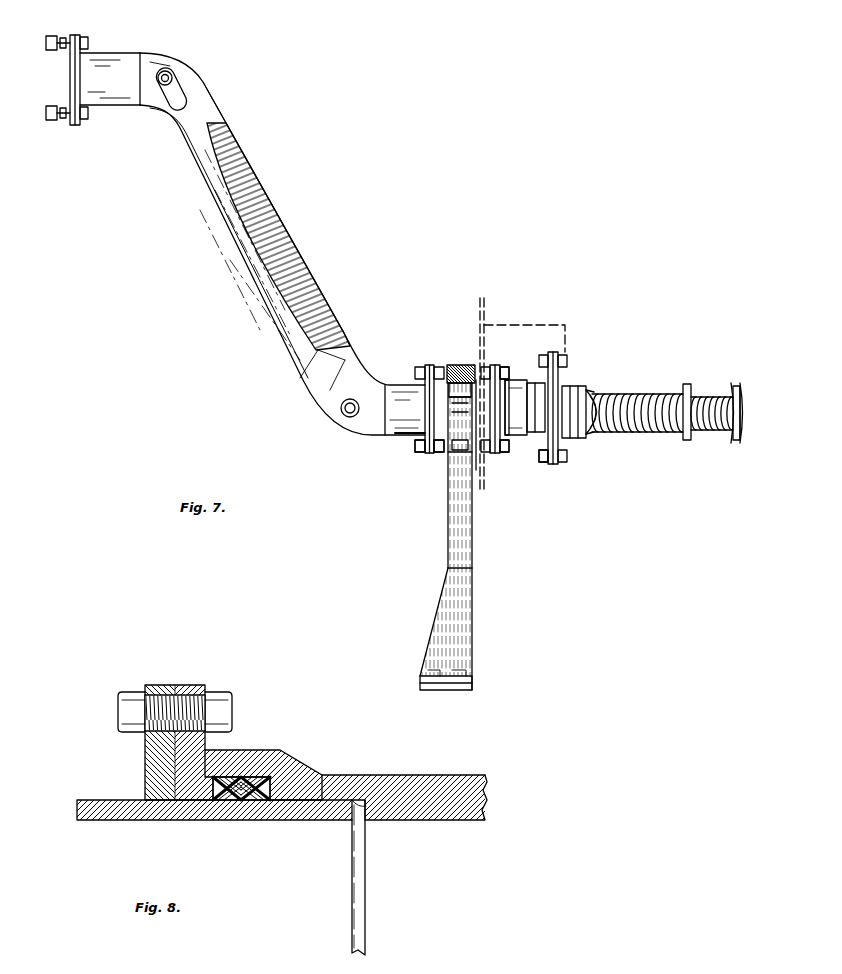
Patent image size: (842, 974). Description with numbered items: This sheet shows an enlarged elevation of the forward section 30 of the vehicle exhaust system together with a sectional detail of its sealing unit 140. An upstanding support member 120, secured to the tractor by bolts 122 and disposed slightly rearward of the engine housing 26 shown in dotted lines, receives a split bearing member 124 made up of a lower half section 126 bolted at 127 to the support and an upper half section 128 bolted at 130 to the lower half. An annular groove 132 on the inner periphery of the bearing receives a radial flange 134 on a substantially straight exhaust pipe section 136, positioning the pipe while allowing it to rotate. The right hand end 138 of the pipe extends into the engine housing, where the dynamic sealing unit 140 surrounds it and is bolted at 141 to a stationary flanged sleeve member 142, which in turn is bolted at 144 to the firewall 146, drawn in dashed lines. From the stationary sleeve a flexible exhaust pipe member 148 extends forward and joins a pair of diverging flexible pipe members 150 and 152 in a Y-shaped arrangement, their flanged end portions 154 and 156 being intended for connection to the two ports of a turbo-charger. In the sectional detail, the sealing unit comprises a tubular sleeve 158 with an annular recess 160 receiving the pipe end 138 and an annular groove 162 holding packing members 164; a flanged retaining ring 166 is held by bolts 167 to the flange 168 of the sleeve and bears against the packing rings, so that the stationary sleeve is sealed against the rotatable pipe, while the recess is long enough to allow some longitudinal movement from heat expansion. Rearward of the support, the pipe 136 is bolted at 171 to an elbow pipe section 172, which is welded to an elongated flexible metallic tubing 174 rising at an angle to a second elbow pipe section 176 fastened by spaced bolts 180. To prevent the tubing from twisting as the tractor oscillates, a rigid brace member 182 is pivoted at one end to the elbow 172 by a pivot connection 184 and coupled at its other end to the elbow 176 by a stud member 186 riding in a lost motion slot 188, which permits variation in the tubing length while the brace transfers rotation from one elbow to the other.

In FIG. 7, the engine housing 26 is at (486, 311).
In FIG. 7, the front portion of the exhaust system 30 is at (294, 246).
In FIG. 7, the support member 120 is at (465, 546).
In FIG. 7, the bolts 122 is at (470, 678).
In FIG. 7, the split bearing member 124 is at (441, 444).
In FIG. 7, the lower half section 126 is at (468, 447).
In FIG. 7, the bolts 127 is at (479, 463).
In FIG. 7, the upper half section 128 is at (456, 366).
In FIG. 7, the bolts 130 is at (478, 386).
In FIG. 7, the annular groove 132 is at (462, 385).
In FIG. 7, the radial flange 134 is at (441, 366).
In FIG. 7, the straight exhaust pipe section 136 is at (412, 445).
In FIG. 8, the straight exhaust pipe section 136 is at (146, 805).
In FIG. 7, the right hand end 138 is at (531, 420).
In FIG. 8, the right hand end 138 is at (306, 812).
In FIG. 7, the dynamic sealing unit 140 is at (519, 390).
In FIG. 8, the dynamic sealing unit 140 is at (292, 752).
In FIG. 7, the bolts 141 is at (550, 458).
In FIG. 7, the stationary flanged sleeve member 142 is at (576, 394).
In FIG. 7, the bolts 144 is at (560, 360).
In FIG. 7, the firewall 146 is at (566, 325).
In FIG. 7, the flexible exhaust pipe member 148 is at (606, 406).
In FIG. 7, the flexible pipe member 150 is at (658, 407).
In FIG. 7, the flexible pipe member 152 is at (711, 426).
In FIG. 7, the flanged end portion 154 is at (694, 388).
In FIG. 7, the flanged end portion 156 is at (741, 441).
In FIG. 7, the tubular sleeve 158 is at (520, 386).
In FIG. 8, the tubular sleeve 158 is at (339, 774).
In FIG. 8, the annular recess 160 is at (400, 800).
In FIG. 8, the annular groove 162 is at (245, 806).
In FIG. 8, the packing members 164 is at (236, 770).
In FIG. 7, the flanged retaining ring 166 is at (505, 444).
In FIG. 8, the flanged retaining ring 166 is at (147, 752).
In FIG. 7, the bolts 167 is at (506, 378).
In FIG. 8, the bolts 167 is at (216, 700).
In FIG. 8, the flange 168 is at (188, 692).
In FIG. 7, the bolts 171 is at (418, 452).
In FIG. 7, the elbow pipe section 172 is at (358, 384).
In FIG. 7, the flexible metallic tubing 174 is at (255, 166).
In FIG. 7, the second elbow pipe section 176 is at (148, 62).
In FIG. 7, the bolts 180 is at (88, 45).
In FIG. 7, the brace member 182 is at (248, 268).
In FIG. 7, the pivot connection 184 is at (336, 423).
In FIG. 7, the stud member 186 is at (176, 80).
In FIG. 7, the lost motion slot 188 is at (184, 106).